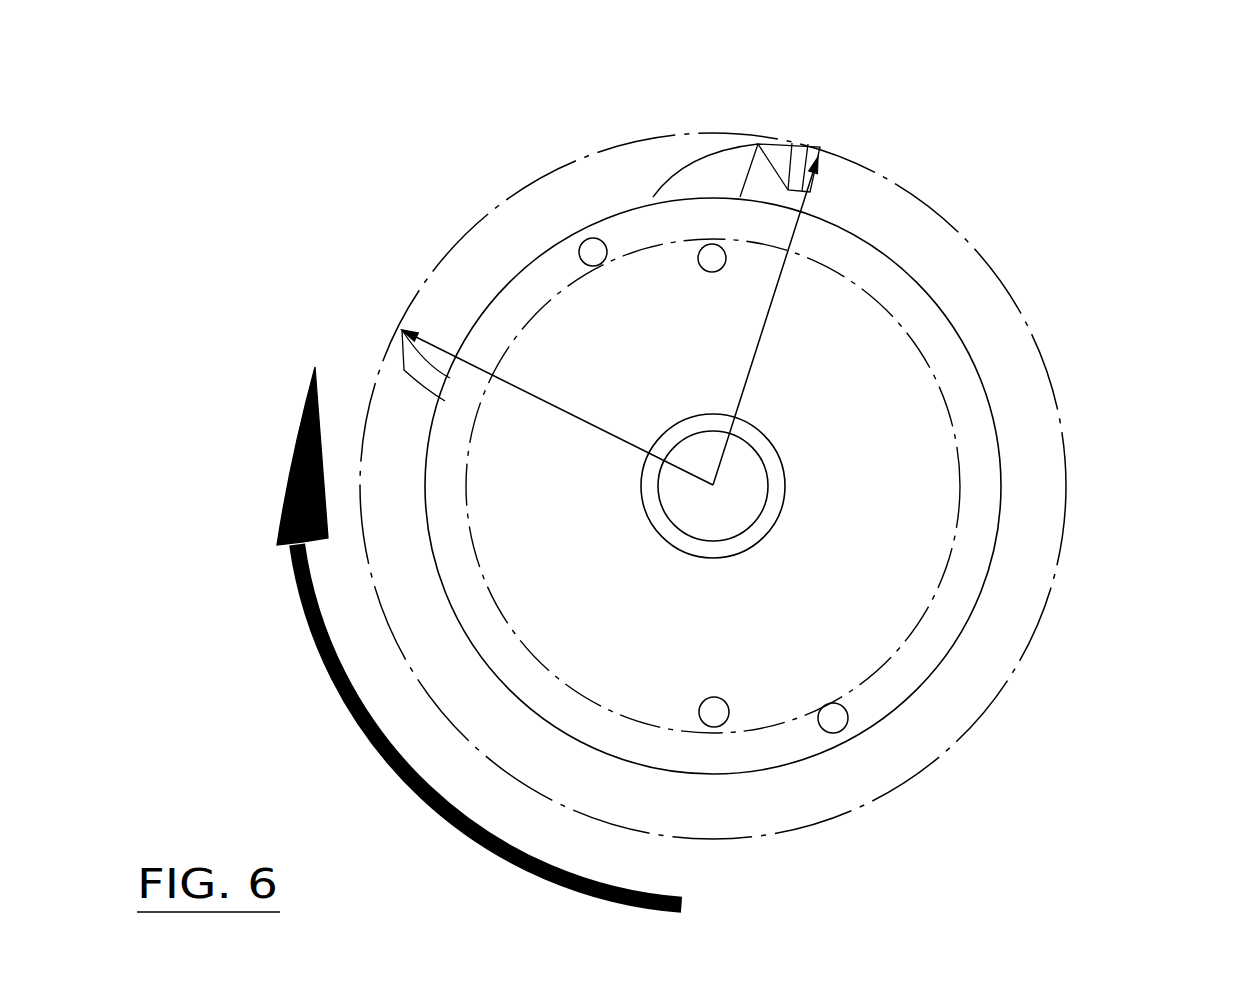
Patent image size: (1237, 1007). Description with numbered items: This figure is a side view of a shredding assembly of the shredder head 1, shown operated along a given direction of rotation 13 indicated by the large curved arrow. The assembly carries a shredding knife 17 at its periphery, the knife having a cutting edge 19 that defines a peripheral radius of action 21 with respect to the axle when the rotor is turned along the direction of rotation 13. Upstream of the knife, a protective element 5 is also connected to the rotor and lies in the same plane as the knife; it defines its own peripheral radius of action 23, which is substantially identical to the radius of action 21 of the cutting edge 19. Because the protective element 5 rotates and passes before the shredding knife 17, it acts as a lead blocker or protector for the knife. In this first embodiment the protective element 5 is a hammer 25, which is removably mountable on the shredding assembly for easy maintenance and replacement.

The shredder head 1 is at (1122, 476).
The protective element 5 is at (843, 140).
The direction of rotation 13 is at (301, 590).
The shredding knife 17 is at (412, 385).
The cutting edge 19 is at (400, 329).
The peripheral radius of action 21 is at (560, 413).
The peripheral radius of action 23 is at (770, 317).
The hammer 25 is at (798, 140).